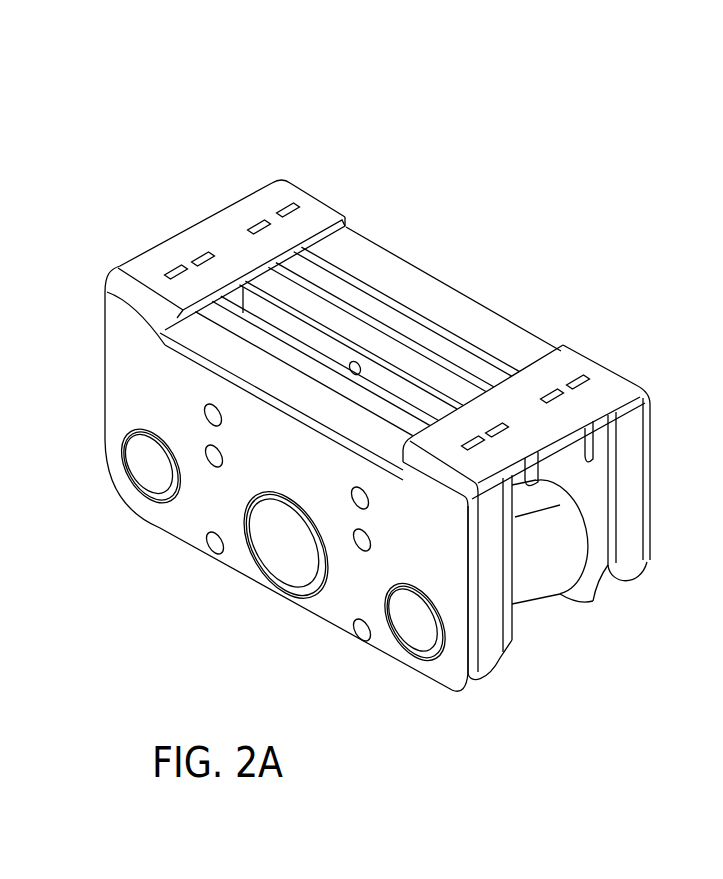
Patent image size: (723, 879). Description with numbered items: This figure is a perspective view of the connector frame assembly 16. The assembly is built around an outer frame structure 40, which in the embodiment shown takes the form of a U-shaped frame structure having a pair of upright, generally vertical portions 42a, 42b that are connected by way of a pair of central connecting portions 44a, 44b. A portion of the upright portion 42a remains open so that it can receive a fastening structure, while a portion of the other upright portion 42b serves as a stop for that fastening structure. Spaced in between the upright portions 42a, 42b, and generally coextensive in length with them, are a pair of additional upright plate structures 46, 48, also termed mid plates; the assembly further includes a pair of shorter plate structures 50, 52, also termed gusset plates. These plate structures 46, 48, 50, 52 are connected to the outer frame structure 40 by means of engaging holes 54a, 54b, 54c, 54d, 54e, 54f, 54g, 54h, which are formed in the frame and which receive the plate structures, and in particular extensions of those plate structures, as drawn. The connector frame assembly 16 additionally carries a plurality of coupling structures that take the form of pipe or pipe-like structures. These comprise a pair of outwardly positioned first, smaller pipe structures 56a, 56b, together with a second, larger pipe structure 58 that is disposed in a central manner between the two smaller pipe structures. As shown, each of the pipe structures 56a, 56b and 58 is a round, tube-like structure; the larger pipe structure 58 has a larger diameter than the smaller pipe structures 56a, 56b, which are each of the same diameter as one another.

The connector frame assembly 16 is at (168, 186).
The outer frame structure 40 is at (652, 468).
The upright portion 42a is at (465, 673).
The upright portion 42b is at (642, 572).
The central connecting portion 44a is at (220, 233).
The central connecting portion 44b is at (598, 393).
The upright plate structure (mid plate) 46 is at (493, 658).
The upright plate structure (mid plate) 48 is at (593, 601).
The shorter plate structure (gusset plate) 50 is at (538, 481).
The shorter plate structure (gusset plate) 52 is at (598, 433).
The engaging hole 54a is at (170, 266).
The engaging hole 54b is at (197, 256).
The engaging hole 54c is at (258, 222).
The engaging hole 54d is at (290, 207).
The engaging hole 54e is at (468, 438).
The engaging hole 54f is at (495, 423).
The engaging hole 54g is at (552, 384).
The engaging hole 54h is at (580, 377).
The first smaller pipe structure 56a is at (152, 503).
The first smaller pipe structure 56b is at (407, 650).
The second larger pipe structure 58 is at (283, 593).